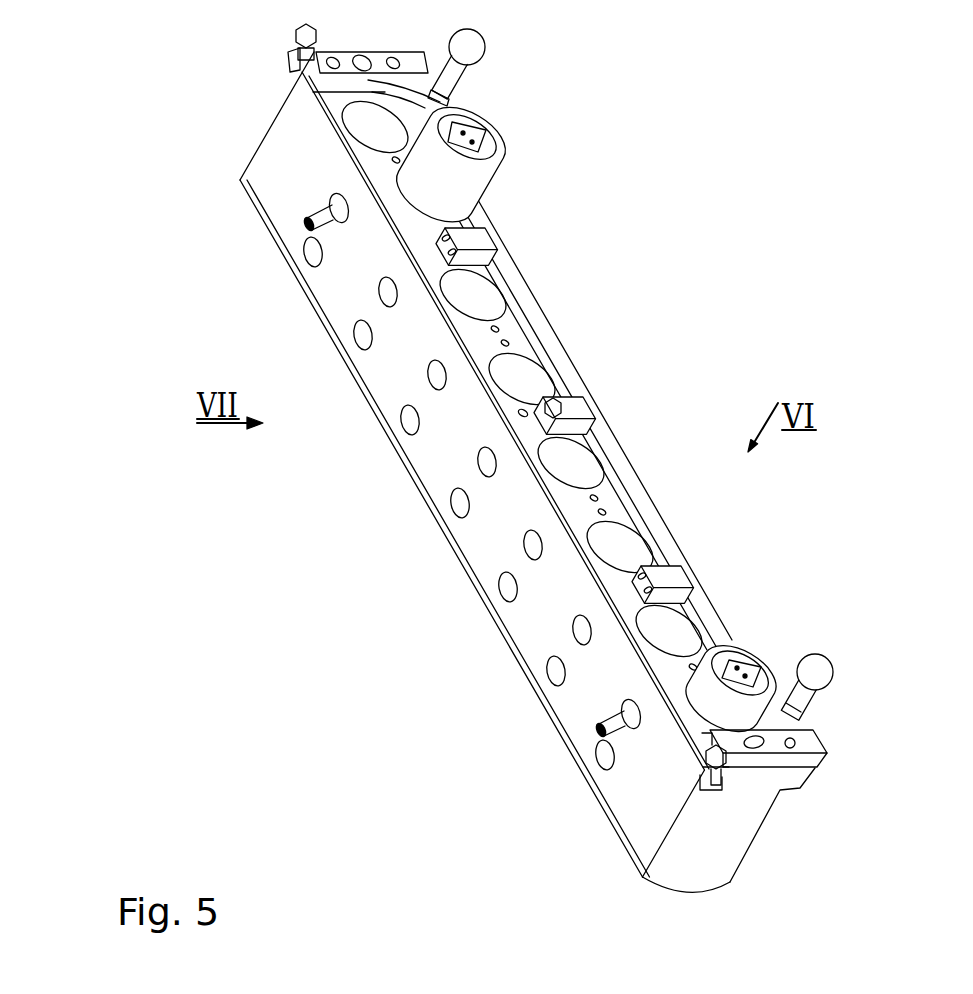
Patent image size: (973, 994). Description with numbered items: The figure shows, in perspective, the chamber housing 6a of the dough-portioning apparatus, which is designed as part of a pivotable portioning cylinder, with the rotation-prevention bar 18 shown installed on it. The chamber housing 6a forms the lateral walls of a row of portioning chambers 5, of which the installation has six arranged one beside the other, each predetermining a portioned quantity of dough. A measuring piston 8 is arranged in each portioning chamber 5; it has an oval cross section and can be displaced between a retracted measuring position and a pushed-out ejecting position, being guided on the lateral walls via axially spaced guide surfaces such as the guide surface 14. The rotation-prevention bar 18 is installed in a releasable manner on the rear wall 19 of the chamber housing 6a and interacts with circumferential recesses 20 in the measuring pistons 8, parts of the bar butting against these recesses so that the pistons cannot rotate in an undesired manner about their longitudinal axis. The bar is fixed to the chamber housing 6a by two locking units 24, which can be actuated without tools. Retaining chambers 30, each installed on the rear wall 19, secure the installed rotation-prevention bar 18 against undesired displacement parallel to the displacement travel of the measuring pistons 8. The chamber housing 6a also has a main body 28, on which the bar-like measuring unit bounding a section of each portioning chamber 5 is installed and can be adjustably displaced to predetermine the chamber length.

The portioning chamber 5 is at (533, 383).
The chamber housing 6a is at (345, 307).
The measuring piston 8 is at (502, 136).
The guide surface 14 is at (753, 663).
The rotation-prevention bar 18 is at (537, 313).
The rear wall 19 is at (520, 415).
The circumferential recess 20 is at (487, 208).
The locking unit 24 is at (470, 47).
The main body 28 is at (495, 572).
The retaining chamber 30 is at (445, 235).